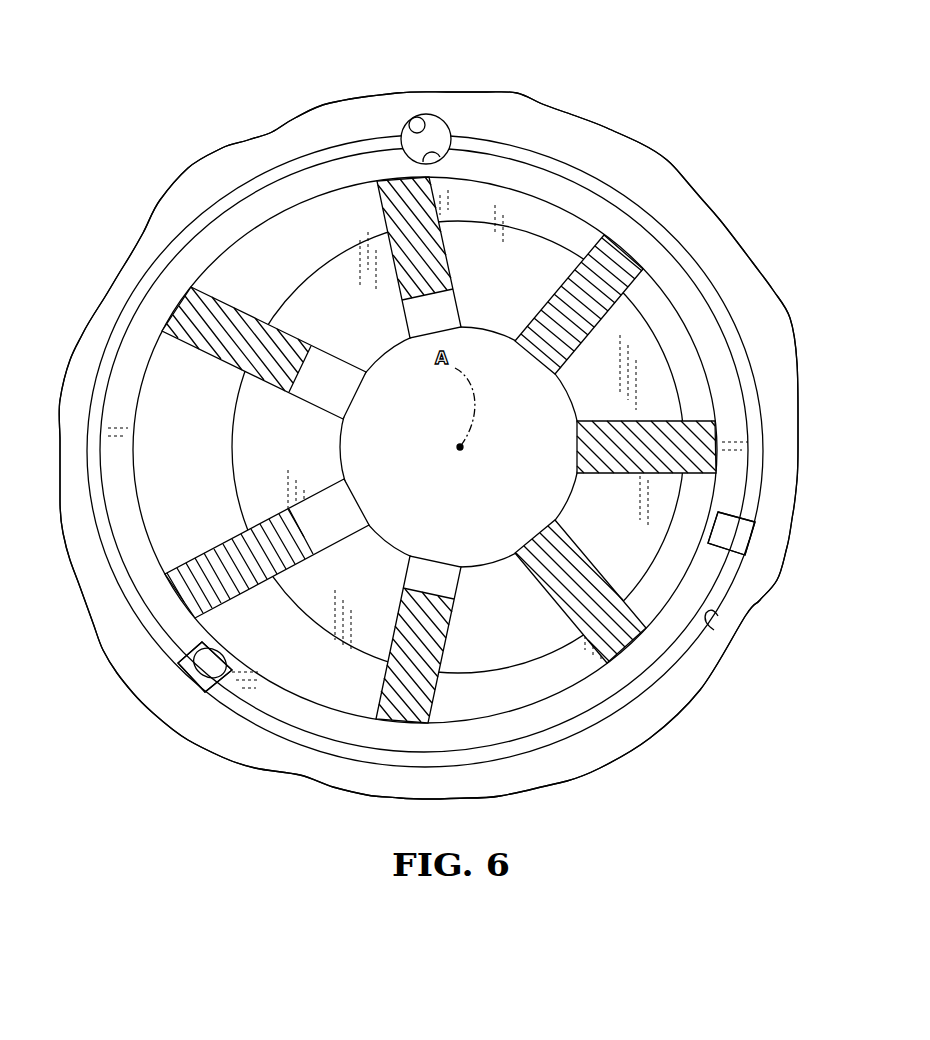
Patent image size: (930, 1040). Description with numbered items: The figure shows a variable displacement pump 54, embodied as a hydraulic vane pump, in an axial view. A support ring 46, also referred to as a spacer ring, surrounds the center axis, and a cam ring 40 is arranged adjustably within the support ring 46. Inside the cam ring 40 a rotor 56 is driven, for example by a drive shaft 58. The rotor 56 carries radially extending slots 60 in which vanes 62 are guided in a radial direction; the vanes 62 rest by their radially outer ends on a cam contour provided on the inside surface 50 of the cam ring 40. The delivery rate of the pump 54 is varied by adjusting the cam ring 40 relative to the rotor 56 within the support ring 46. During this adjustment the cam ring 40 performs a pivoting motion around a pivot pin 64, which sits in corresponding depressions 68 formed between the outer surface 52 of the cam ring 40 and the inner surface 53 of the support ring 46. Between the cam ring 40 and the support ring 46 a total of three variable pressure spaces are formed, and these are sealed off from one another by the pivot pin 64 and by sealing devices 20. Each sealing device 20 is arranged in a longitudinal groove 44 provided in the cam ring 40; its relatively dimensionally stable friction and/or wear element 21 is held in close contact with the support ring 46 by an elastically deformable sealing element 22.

The sealing device 20 is at (739, 540).
The friction and/or wear element 21 is at (200, 681).
The elastically deformable sealing element 22 is at (180, 668).
The cam ring 40 is at (568, 176).
The longitudinal groove 44 is at (756, 523).
The support ring 46 is at (633, 139).
The inside surface 50 is at (680, 318).
The outer surface 52 is at (692, 266).
The inner surface 53 is at (714, 630).
The variable displacement pump 54 is at (739, 157).
The rotor 56 is at (314, 295).
The drive shaft 58 is at (400, 397).
The radially extending slot 60 is at (555, 530).
The vane 62 is at (420, 262).
The pivot pin 64 is at (437, 121).
The depression 68 is at (431, 134).